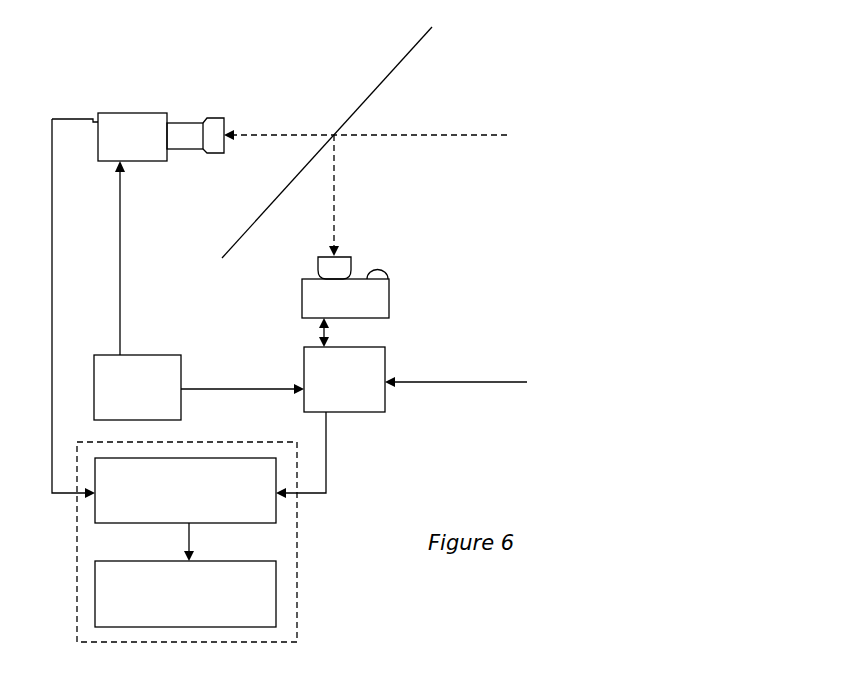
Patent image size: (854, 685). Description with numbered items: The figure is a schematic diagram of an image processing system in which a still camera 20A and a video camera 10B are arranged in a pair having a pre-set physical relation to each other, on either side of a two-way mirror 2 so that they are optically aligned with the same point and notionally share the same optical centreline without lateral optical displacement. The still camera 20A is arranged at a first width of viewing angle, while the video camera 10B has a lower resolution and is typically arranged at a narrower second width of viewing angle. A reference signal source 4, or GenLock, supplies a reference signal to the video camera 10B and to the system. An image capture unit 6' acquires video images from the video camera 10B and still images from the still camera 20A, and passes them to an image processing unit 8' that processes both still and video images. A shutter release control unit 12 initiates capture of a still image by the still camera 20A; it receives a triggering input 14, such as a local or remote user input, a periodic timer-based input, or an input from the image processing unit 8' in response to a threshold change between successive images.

The two-way mirror 2 is at (339, 142).
The video camera 10B is at (138, 234).
The still camera 20A is at (375, 302).
The reference signal source 4 is at (199, 387).
The shutter release control unit 12 is at (330, 422).
The triggering input 14 is at (477, 380).
The image capture unit 6' is at (164, 340).
The image processing unit 8' is at (185, 594).